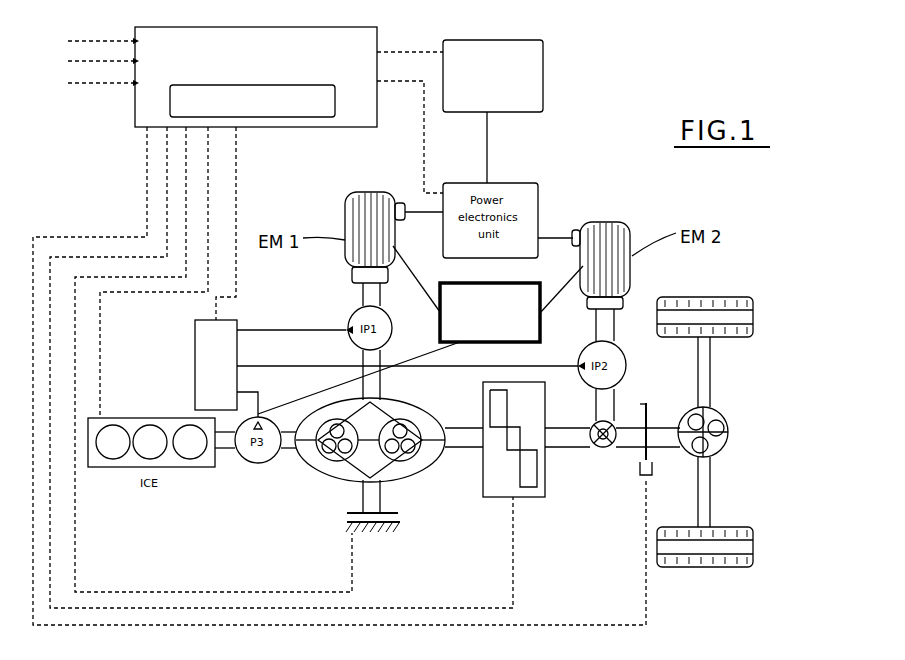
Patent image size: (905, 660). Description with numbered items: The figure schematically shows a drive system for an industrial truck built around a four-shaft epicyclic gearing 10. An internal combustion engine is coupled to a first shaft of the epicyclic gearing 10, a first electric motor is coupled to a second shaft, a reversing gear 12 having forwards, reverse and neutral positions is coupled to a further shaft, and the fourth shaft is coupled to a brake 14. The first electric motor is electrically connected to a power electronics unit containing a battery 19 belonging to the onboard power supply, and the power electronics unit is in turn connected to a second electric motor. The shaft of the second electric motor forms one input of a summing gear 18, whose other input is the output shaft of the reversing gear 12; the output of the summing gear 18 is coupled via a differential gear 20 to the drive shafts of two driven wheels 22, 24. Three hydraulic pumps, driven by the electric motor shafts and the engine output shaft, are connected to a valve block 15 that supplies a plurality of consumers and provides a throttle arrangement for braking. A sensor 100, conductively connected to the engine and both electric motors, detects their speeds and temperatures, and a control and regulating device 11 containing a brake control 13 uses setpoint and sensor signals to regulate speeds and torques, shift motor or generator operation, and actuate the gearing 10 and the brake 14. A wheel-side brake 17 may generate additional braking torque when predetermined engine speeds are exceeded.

The four-shaft epicyclic gearing 10 is at (434, 408).
The control and regulating device 11 is at (350, 118).
The reversing gear 12 is at (548, 479).
The brake control 13 is at (268, 118).
The brake 14 is at (393, 513).
The valve block 15 is at (197, 362).
The brake 17 is at (648, 406).
The summing gear 18 is at (617, 422).
The battery 19 is at (545, 78).
The differential gear 20 is at (728, 406).
The driven wheel 22 is at (753, 318).
The driven wheel 24 is at (740, 567).
The sensor 100 is at (420, 330).